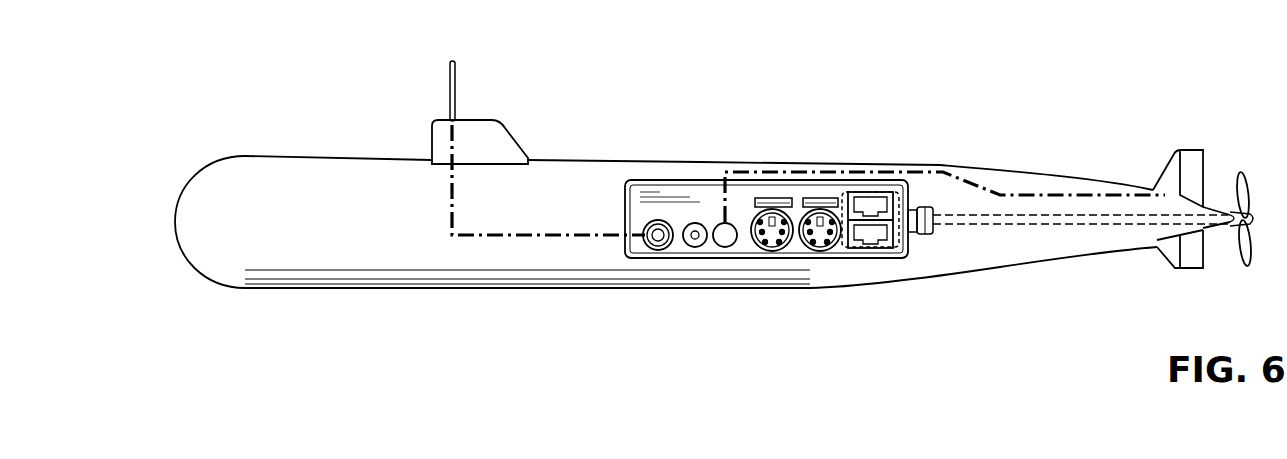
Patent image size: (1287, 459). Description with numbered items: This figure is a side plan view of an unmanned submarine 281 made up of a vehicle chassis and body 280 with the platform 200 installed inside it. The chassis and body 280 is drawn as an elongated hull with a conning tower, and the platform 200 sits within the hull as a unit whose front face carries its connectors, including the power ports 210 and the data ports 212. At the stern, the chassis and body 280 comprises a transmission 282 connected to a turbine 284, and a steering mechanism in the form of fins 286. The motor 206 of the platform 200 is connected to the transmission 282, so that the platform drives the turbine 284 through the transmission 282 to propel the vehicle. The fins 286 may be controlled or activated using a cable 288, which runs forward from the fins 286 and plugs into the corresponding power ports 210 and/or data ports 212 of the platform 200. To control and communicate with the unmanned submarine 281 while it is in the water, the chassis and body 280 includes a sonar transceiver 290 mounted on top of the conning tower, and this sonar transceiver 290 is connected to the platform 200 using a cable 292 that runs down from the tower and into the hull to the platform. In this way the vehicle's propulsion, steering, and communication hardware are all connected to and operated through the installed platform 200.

The platform 200 is at (772, 231).
The motor 206 is at (893, 250).
The power ports 210 is at (738, 266).
The data ports 212 is at (890, 266).
The chassis and body 280 is at (648, 162).
The unmanned submarine 281 is at (720, 192).
The transmission 282 is at (1020, 224).
The turbine 284 is at (1242, 172).
The fins 286 is at (1192, 258).
The cable 288 is at (1050, 195).
The sonar transceiver 290 is at (457, 77).
The cable 292 is at (582, 237).